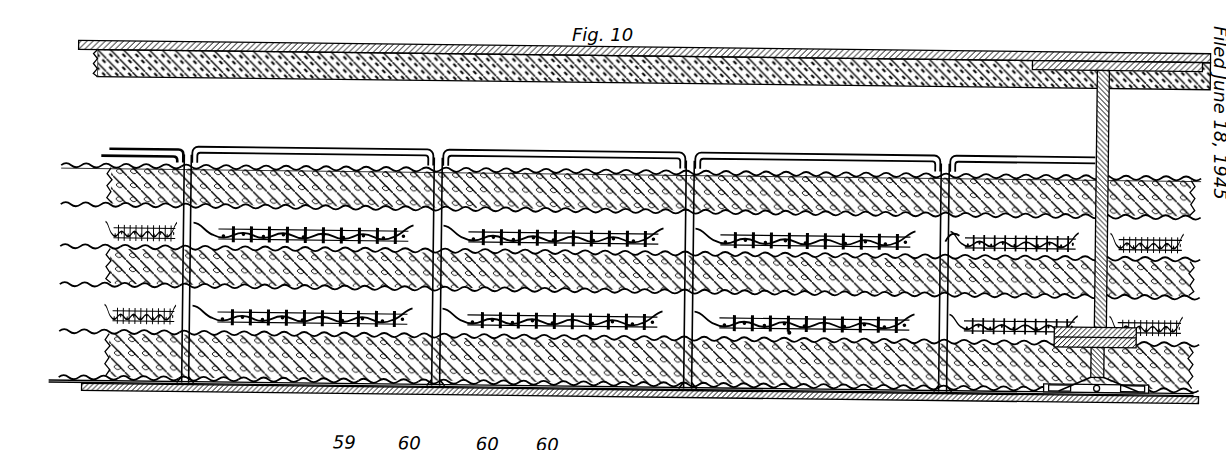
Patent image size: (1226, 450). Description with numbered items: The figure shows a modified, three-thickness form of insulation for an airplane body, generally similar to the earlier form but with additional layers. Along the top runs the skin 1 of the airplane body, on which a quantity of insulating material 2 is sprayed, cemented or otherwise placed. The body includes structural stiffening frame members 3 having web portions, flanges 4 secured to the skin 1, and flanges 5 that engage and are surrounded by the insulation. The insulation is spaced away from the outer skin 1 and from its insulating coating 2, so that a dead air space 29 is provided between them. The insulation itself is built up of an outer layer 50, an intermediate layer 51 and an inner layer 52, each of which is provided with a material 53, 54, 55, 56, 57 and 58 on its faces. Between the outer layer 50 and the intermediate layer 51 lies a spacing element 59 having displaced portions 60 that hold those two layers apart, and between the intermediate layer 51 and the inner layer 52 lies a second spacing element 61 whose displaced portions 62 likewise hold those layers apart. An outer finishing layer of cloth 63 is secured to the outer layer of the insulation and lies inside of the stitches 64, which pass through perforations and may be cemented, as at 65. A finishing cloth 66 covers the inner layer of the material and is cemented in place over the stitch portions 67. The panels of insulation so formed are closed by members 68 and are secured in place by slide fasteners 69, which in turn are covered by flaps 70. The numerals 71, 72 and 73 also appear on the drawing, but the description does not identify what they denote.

The skin 1 is at (832, 52).
The insulating material 2 is at (862, 62).
The frame member 3 is at (1108, 131).
The flange 4 is at (1120, 56).
The flange 5 is at (1138, 330).
The dead air space 29 is at (724, 95).
The outer layer 50 is at (120, 195).
The intermediate layer 51 is at (115, 273).
The inner layer 52 is at (120, 358).
The material 53 is at (78, 180).
The material 54 is at (92, 211).
The material 55 is at (95, 253).
The material 56 is at (95, 291).
The material 57 is at (95, 338).
The material 58 is at (60, 384).
The spacing element 59 is at (960, 236).
The displaced portions 60 is at (296, 228).
The spacing element 61 is at (792, 334).
The displaced portions 62 is at (115, 318).
The outer finishing layer of cloth 63 is at (100, 160).
The stitches 64 is at (288, 154).
The cement 65 is at (186, 391).
The finishing cloth 66 is at (140, 398).
The stitch portions 67 is at (70, 390).
The closing member 68 is at (1092, 242).
The slide fastener 69 is at (1100, 390).
The flap 70 is at (1075, 390).
The element 71 is at (821, 443).
The element 72 is at (957, 444).
The element 73 is at (914, 444).